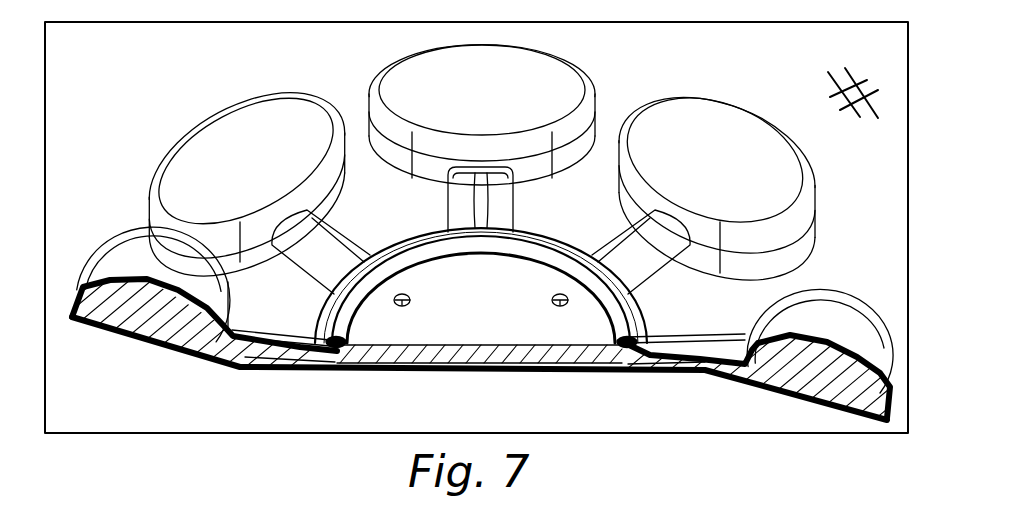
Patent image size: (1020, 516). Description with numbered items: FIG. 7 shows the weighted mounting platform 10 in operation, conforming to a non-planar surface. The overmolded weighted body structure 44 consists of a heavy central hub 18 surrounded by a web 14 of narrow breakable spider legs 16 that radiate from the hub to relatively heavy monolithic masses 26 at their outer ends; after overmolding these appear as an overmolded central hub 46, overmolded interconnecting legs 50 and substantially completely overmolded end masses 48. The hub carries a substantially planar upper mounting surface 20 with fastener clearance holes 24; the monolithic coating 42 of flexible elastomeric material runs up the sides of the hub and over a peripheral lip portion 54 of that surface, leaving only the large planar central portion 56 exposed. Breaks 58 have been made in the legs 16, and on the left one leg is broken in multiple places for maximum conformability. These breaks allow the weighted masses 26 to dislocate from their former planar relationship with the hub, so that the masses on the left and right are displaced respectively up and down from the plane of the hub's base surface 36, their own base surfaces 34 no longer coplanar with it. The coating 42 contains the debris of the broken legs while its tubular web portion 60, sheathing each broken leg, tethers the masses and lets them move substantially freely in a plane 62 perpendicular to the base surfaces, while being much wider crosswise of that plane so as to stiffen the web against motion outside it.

The weighted mounting platform 10 is at (168, 108).
The web 14 is at (630, 240).
The breakable spider legs 16 is at (307, 372).
The central hub 18 is at (453, 258).
The upper mounting surface 20 is at (562, 262).
The fastener clearance holes 24 is at (395, 303).
The monolithic masses 26 is at (163, 317).
The base surfaces 34 is at (140, 338).
The base surface 36 is at (450, 372).
The coating 42 is at (545, 372).
The overmolded weighted body structure 44 is at (838, 228).
The overmolded central hub 46 is at (412, 245).
The overmolded end masses 48 is at (247, 168).
The overmolded interconnecting legs 50 is at (356, 240).
The peripheral lip portion 54 is at (338, 352).
The central portion 56 is at (492, 315).
The break 58 is at (247, 368).
The tubular web portion 60 is at (285, 343).
The plane 62 is at (815, 20).